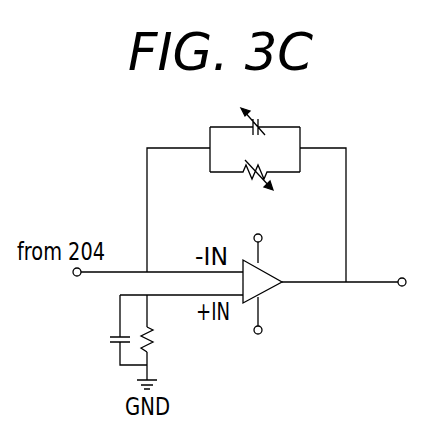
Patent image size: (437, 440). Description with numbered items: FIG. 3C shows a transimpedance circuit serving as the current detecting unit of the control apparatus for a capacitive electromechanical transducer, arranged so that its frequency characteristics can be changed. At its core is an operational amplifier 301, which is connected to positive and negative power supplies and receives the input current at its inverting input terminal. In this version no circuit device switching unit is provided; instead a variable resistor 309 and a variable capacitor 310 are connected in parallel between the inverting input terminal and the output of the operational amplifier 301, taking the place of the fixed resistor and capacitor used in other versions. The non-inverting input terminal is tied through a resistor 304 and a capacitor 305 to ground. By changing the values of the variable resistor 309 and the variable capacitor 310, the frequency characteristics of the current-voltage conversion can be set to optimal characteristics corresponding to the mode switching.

The variable capacitor 310 is at (262, 122).
The variable resistor 309 is at (268, 183).
The operational amplifier 301 is at (265, 293).
The capacitor 305 is at (110, 339).
The resistor 304 is at (150, 347).